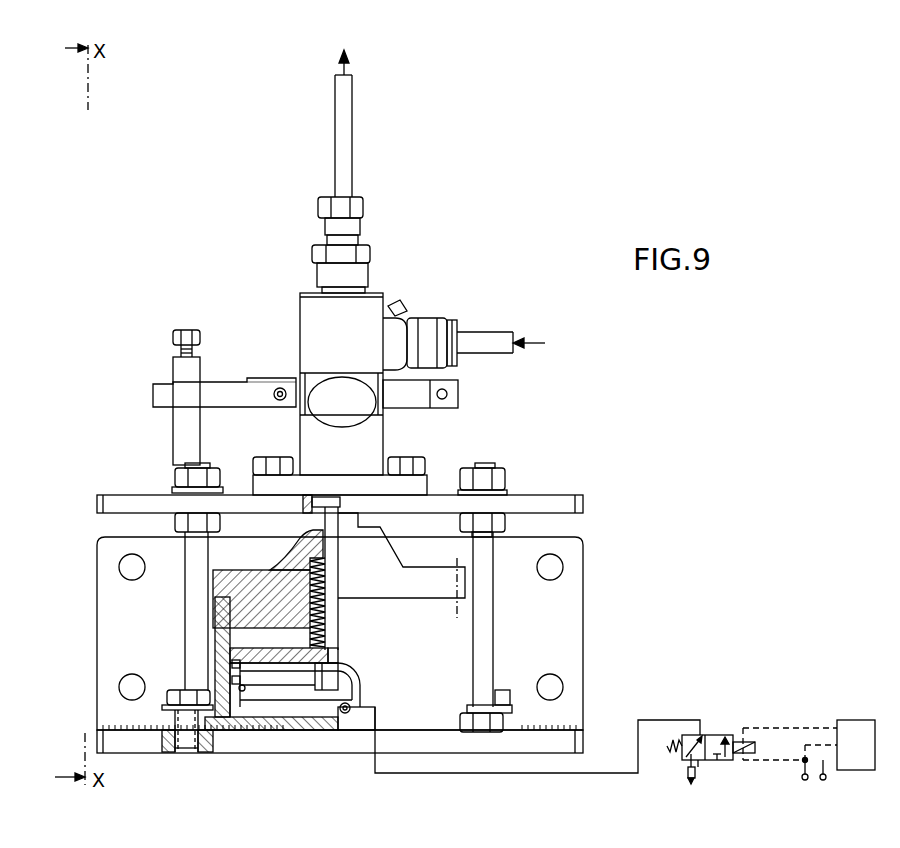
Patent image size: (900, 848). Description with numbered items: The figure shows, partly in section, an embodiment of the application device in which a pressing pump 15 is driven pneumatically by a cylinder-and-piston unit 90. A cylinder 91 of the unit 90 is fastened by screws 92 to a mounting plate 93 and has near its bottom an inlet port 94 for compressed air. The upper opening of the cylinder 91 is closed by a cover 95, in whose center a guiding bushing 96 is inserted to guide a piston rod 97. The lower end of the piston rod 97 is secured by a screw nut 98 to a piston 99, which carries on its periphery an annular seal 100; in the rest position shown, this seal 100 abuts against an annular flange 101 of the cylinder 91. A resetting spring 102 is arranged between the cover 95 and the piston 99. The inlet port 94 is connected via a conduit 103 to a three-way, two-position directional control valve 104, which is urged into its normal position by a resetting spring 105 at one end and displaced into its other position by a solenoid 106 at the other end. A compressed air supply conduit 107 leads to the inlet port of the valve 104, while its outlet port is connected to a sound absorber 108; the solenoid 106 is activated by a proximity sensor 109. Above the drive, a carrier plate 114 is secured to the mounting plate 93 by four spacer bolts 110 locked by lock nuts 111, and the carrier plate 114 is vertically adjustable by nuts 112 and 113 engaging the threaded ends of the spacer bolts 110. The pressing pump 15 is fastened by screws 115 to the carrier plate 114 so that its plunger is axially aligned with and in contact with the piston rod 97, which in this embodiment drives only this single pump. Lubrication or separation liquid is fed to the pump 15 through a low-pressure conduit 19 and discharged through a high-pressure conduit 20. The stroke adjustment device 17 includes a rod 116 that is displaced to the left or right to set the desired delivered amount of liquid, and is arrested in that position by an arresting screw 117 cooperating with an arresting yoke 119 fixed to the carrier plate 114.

The pressing pump 15 is at (294, 323).
The adjustment device 17 is at (262, 374).
The low-pressure conduit 19 is at (470, 340).
The high-pressure conduit 20 is at (352, 132).
The cylinder-and-piston unit 90 is at (208, 627).
The cylinder 91 is at (220, 655).
The screws 92 is at (167, 690).
The mounting plate 93 is at (110, 742).
The inlet port 94 is at (350, 695).
The cover 95 is at (213, 580).
The guiding bushing 96 is at (310, 535).
The piston rod 97 is at (335, 556).
The screw nut 98 is at (338, 675).
The piston 99 is at (338, 655).
The annular seal 100 is at (232, 670).
The annular flange 101 is at (242, 691).
The resetting spring 102 is at (310, 580).
The conduit 103 is at (565, 774).
The directional control valve 104 is at (708, 735).
The resetting spring 105 is at (674, 746).
The solenoid 106 is at (760, 742).
The compressed air supply conduit 107 is at (700, 762).
The sound absorber 108 is at (688, 772).
The proximity sensor 109 is at (857, 720).
The spacer bolts 110 is at (185, 600).
The lock nuts 111 is at (460, 722).
The nuts 112 is at (175, 523).
The nuts 113 is at (175, 478).
The carrier plate 114 is at (583, 512).
The screws 115 is at (262, 457).
The rod 116 is at (233, 408).
The arresting screw 117 is at (193, 334).
The arresting yoke 119 is at (173, 433).